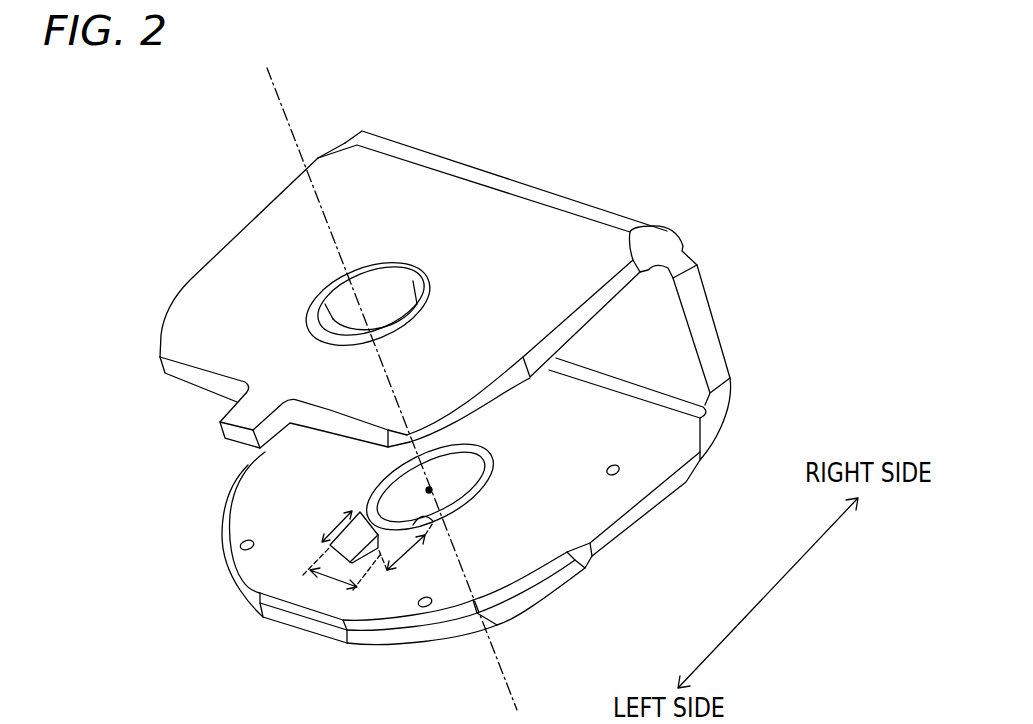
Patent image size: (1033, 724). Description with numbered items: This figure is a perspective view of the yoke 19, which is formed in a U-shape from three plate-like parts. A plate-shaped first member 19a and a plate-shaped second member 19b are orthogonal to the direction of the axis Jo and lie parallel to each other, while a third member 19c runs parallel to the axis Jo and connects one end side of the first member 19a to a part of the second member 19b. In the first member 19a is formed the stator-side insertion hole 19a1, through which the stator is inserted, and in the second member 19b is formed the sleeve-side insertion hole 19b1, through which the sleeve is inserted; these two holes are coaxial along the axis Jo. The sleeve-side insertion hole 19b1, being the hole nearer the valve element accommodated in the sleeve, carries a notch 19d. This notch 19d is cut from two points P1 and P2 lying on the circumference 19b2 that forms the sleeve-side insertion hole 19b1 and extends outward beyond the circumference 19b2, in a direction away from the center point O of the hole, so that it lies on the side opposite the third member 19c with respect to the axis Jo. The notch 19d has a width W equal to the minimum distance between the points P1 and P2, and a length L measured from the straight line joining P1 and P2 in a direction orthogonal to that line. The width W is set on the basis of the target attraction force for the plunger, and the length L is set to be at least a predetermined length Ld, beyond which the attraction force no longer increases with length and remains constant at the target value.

The yoke 19 is at (154, 139).
The first member 19a is at (428, 289).
The stator-side insertion hole 19a1 is at (330, 284).
The second member 19b is at (487, 501).
The sleeve-side insertion hole 19b1 is at (467, 482).
The circumference 19b2 is at (465, 518).
The third member 19c is at (705, 311).
The notch 19d is at (360, 513).
The axis Jo is at (270, 76).
The center point O is at (436, 489).
The point P1 is at (363, 510).
The point P2 is at (433, 523).
The length L is at (406, 556).
The predetermined length Ld is at (326, 520).
The width W is at (341, 580).